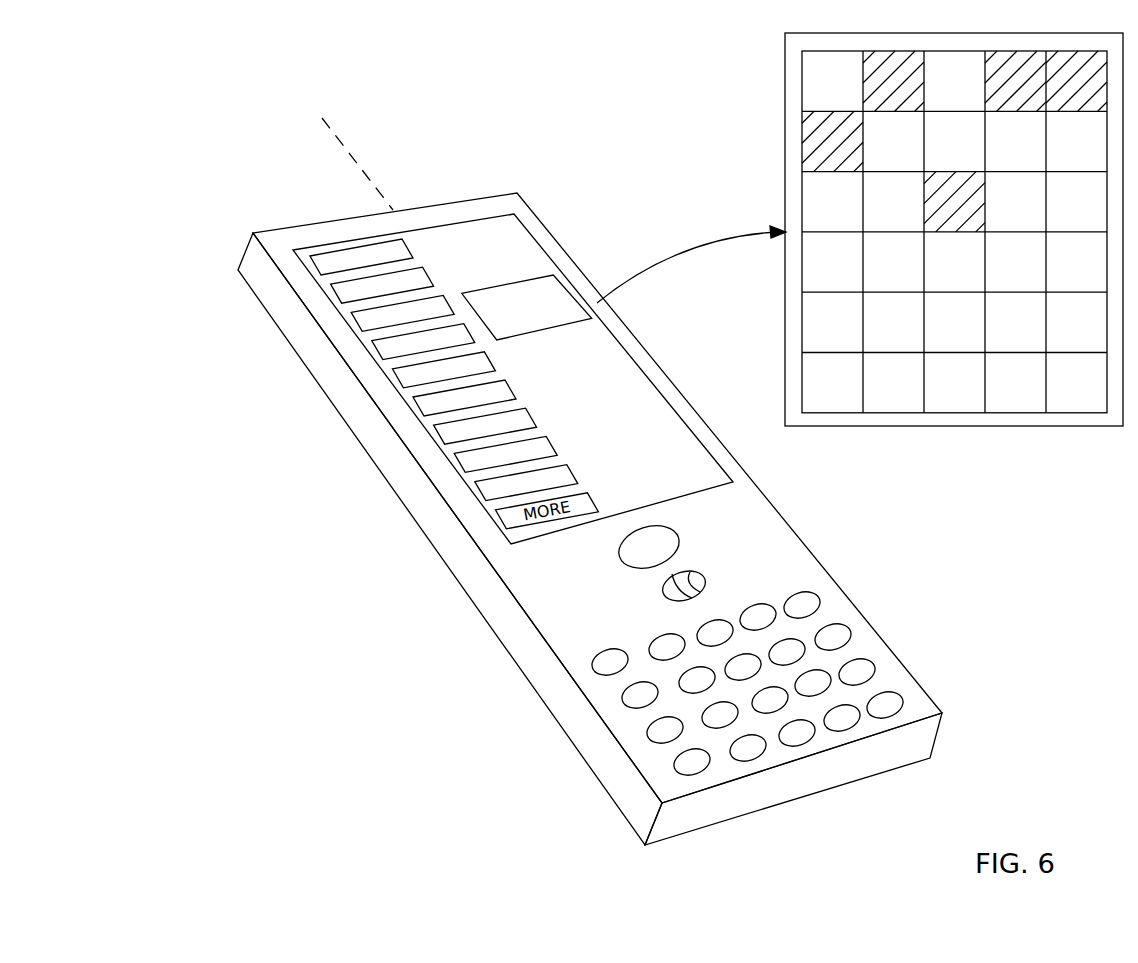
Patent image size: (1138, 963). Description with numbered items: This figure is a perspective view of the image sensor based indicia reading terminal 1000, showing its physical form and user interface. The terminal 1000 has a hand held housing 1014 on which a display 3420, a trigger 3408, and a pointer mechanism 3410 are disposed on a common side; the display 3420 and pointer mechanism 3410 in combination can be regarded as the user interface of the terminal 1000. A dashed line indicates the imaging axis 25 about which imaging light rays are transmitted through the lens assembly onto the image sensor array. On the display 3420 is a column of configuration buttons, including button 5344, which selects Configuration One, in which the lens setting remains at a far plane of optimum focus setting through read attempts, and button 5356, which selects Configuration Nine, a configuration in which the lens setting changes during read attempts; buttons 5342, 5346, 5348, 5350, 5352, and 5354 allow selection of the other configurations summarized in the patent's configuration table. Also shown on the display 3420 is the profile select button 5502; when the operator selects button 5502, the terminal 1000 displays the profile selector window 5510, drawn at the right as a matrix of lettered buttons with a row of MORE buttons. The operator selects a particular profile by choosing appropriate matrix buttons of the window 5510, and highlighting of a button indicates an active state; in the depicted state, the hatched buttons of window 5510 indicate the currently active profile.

The terminal 1000 is at (501, 118).
The imaging axis 25 is at (359, 162).
The display 3420 is at (647, 370).
The button 5502 is at (540, 270).
The button 5344 is at (313, 262).
The button 5342 is at (334, 290).
The button 5346 is at (375, 347).
The button 5348 is at (395, 375).
The button 5350 is at (416, 403).
The button 5352 is at (437, 431).
The button 5354 is at (457, 459).
The button 5356 is at (480, 495).
The trigger 3408 is at (676, 534).
The pointer mechanism 3410 is at (703, 580).
The hand held housing 1014 is at (841, 613).
The profile selector window 5510 is at (972, 427).